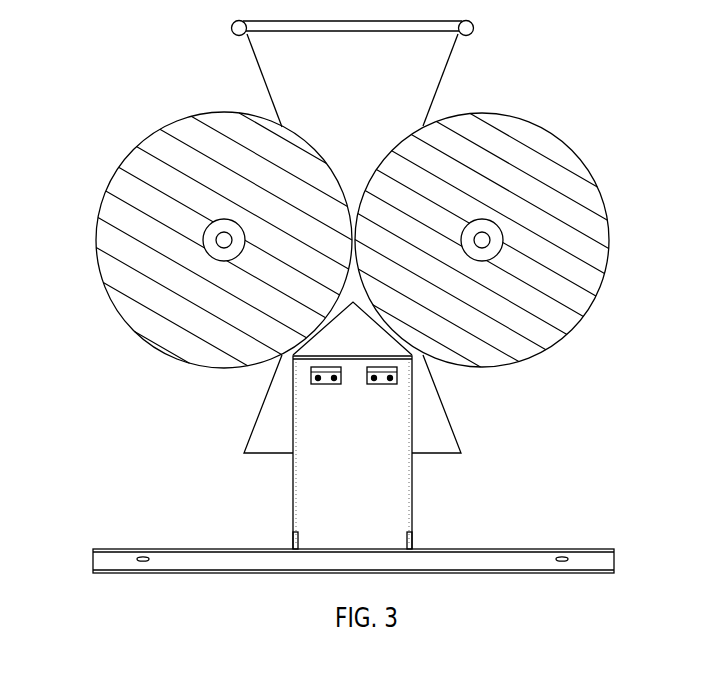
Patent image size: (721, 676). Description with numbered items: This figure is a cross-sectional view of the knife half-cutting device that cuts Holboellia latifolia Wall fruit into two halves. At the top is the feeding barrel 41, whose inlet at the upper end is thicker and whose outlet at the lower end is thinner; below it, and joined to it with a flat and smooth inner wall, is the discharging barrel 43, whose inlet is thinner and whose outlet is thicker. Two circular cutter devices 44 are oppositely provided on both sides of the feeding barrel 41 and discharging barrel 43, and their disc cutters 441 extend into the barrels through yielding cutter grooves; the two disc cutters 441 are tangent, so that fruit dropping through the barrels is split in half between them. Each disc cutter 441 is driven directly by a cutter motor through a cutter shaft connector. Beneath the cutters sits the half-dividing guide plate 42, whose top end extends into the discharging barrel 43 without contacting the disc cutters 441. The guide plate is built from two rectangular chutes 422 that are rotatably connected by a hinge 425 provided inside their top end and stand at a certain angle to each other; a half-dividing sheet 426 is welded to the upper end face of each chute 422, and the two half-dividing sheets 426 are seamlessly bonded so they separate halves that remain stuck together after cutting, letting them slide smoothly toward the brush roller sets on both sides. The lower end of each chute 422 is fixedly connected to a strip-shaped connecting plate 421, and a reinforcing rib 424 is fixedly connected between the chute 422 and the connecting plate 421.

The feeding barrel 41 is at (310, 122).
The circular cutter device 44 is at (205, 229).
The disc cutter 441 is at (537, 242).
The half-dividing sheet 426 is at (340, 335).
The discharging barrel 43 is at (275, 417).
The half-dividing guide plate 42 is at (345, 533).
The chute 422 is at (380, 512).
The hinge 425 is at (400, 375).
The reinforcing rib 424 is at (413, 540).
The connecting plate 421 is at (457, 555).